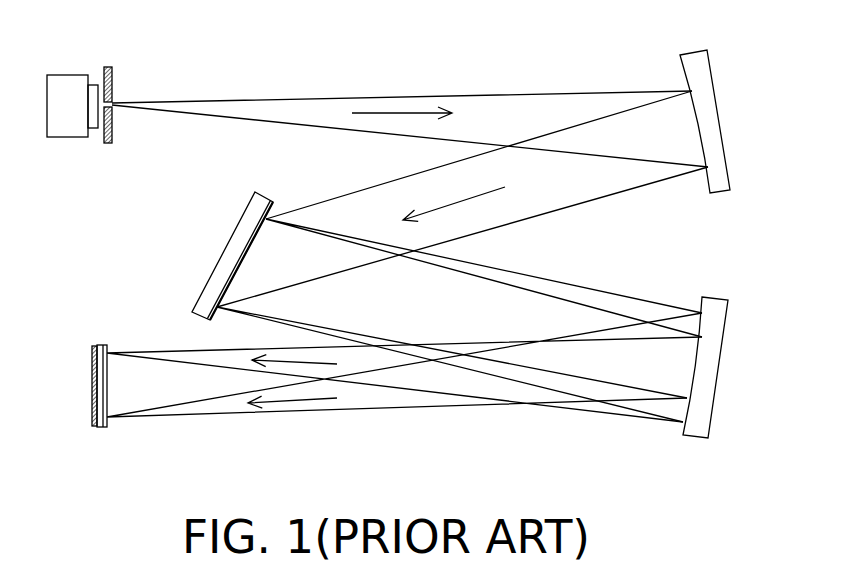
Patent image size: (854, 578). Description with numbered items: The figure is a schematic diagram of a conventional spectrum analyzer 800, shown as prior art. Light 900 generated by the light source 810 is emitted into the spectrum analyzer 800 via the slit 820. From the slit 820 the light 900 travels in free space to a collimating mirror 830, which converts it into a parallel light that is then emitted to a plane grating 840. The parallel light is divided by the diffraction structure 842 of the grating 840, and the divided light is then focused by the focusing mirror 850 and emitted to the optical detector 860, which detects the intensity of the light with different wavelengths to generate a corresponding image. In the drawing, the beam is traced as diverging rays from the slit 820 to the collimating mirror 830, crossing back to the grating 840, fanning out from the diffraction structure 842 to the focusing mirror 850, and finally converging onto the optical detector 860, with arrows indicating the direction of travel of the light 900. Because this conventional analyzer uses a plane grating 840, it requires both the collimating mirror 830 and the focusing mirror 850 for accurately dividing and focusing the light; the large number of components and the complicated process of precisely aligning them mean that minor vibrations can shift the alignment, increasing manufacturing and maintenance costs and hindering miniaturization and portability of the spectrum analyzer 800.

The spectrum analyzer 800 is at (362, 68).
The light source 810 is at (65, 75).
The slit 820 is at (108, 143).
The collimating mirror 830 is at (692, 55).
The plane grating 840 is at (231, 256).
The diffraction structure 842 is at (245, 255).
The focusing mirror 850 is at (710, 297).
The optical detector 860 is at (100, 427).
The light 900 is at (243, 99).